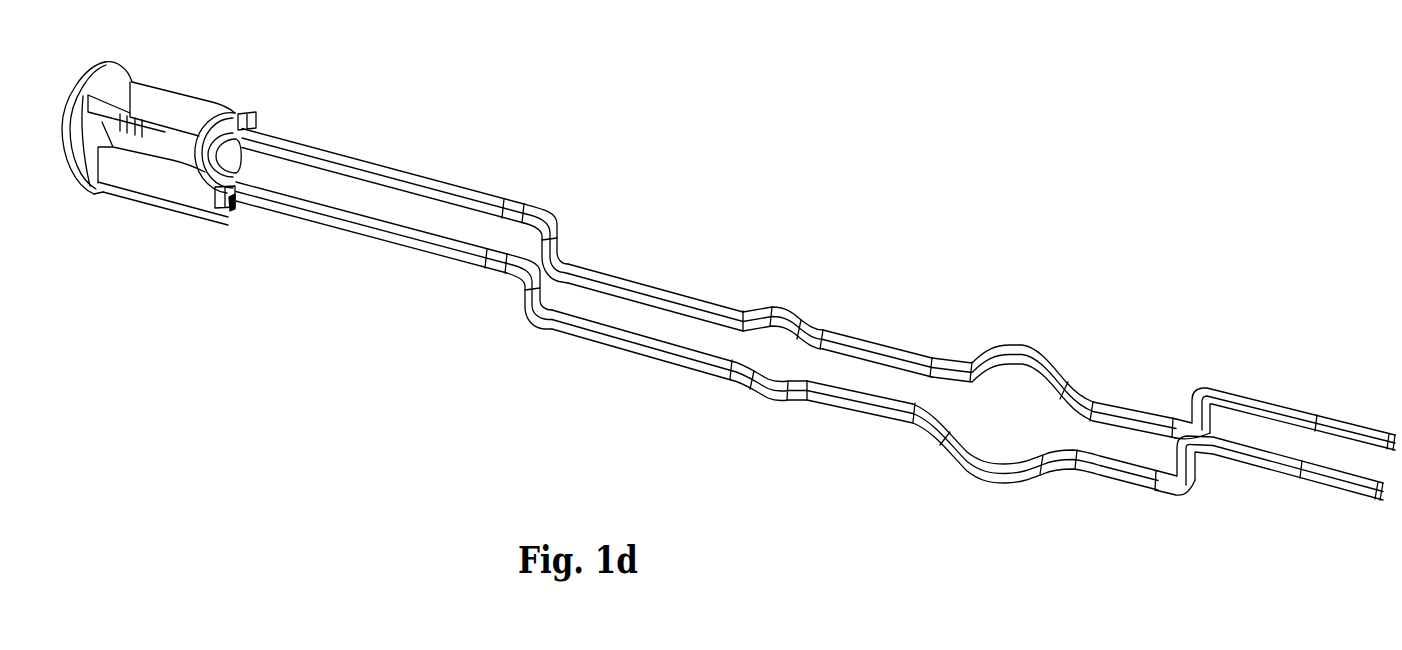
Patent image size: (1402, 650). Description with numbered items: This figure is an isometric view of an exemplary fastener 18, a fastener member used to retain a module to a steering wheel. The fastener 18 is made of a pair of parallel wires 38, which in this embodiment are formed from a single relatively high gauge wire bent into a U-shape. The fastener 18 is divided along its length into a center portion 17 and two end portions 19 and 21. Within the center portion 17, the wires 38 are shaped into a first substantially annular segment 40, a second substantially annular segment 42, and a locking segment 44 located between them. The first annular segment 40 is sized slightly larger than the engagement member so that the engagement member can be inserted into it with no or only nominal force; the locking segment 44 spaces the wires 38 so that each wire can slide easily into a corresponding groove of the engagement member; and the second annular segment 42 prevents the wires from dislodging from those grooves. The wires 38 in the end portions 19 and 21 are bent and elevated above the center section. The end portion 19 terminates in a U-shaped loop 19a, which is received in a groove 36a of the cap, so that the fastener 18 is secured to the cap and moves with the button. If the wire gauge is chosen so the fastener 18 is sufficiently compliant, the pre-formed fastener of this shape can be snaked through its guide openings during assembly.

The center portion 17 is at (865, 303).
The fastener 18 is at (662, 140).
The end portion 19 is at (402, 146).
The U-shaped loop 19a is at (237, 112).
The end portion 21 is at (1265, 376).
The groove 36a is at (202, 160).
The wires 38 is at (652, 280).
The first substantially annular segment 40 is at (1030, 343).
The second substantially annular segment 42 is at (780, 305).
The locking segment 44 is at (887, 340).